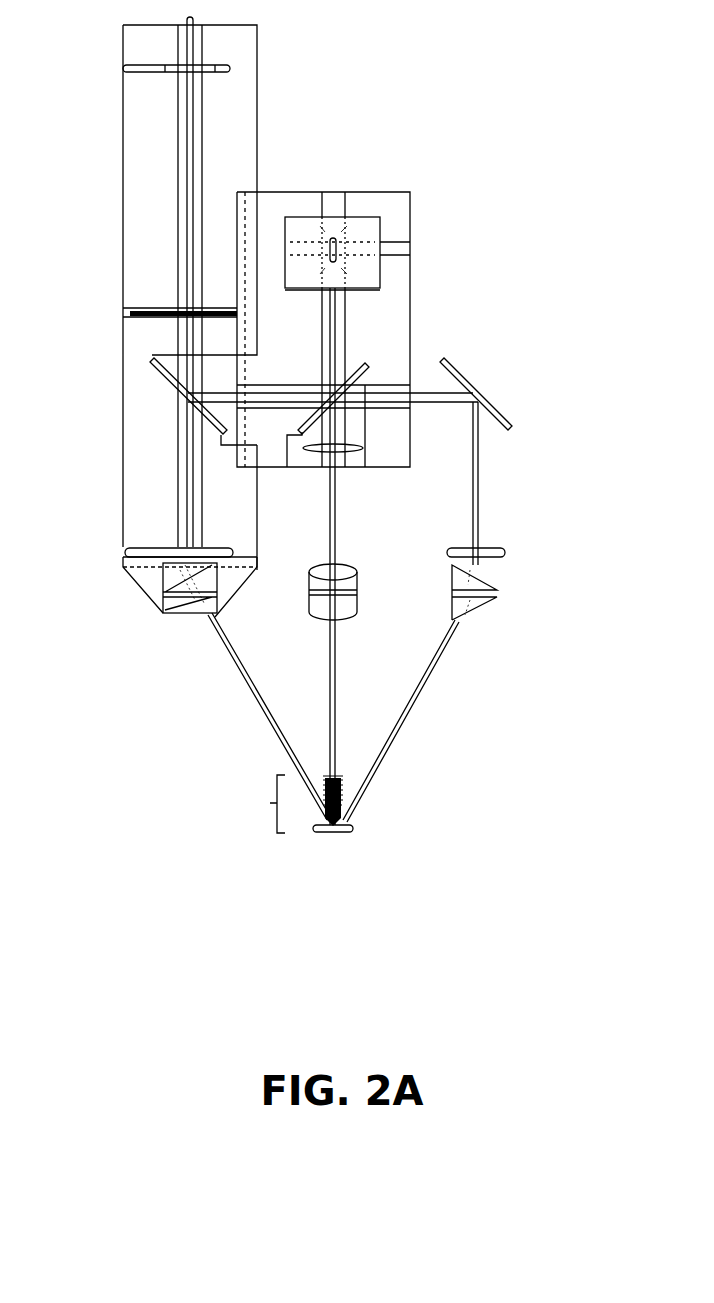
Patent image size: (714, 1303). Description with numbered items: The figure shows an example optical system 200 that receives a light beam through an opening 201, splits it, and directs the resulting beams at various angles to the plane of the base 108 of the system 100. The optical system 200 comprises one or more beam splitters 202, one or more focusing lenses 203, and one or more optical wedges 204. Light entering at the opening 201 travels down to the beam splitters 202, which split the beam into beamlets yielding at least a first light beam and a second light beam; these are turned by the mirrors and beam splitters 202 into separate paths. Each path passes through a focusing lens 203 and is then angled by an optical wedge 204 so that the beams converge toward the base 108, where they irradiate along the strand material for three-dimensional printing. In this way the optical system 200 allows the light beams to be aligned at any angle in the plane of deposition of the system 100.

The optical system 200 is at (352, 425).
The opening 201 is at (190, 17).
The beam splitters 202 is at (160, 385).
The focusing lenses 203 is at (163, 545).
The optical wedges 204 is at (167, 615).
The system 100 is at (256, 804).
The base 108 is at (343, 832).